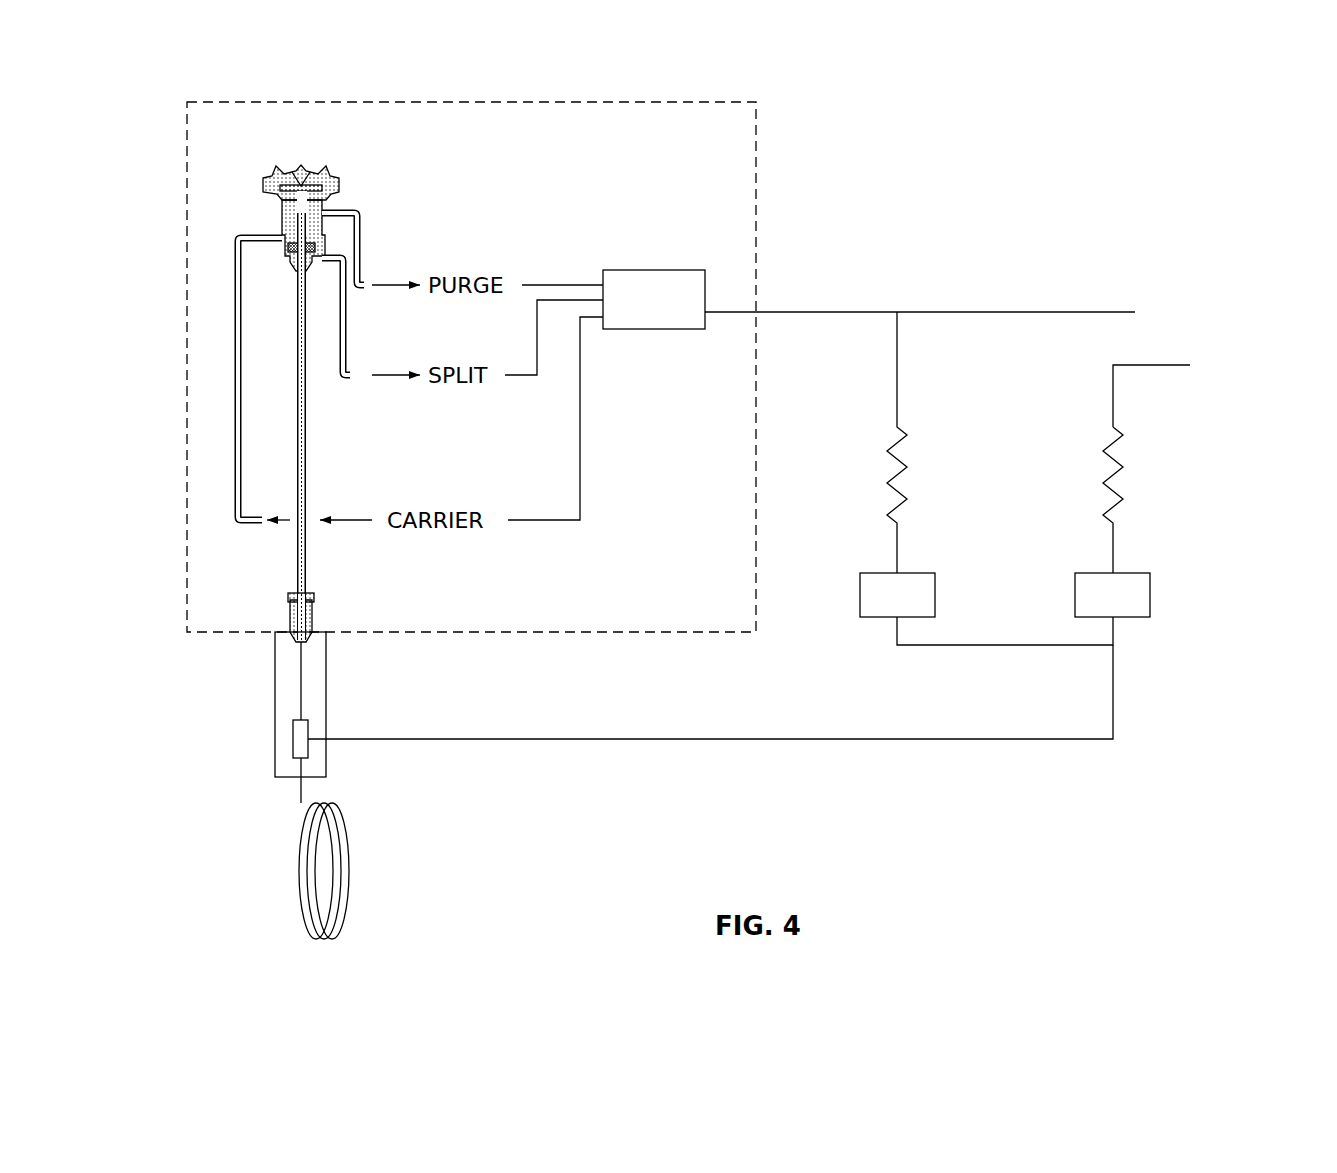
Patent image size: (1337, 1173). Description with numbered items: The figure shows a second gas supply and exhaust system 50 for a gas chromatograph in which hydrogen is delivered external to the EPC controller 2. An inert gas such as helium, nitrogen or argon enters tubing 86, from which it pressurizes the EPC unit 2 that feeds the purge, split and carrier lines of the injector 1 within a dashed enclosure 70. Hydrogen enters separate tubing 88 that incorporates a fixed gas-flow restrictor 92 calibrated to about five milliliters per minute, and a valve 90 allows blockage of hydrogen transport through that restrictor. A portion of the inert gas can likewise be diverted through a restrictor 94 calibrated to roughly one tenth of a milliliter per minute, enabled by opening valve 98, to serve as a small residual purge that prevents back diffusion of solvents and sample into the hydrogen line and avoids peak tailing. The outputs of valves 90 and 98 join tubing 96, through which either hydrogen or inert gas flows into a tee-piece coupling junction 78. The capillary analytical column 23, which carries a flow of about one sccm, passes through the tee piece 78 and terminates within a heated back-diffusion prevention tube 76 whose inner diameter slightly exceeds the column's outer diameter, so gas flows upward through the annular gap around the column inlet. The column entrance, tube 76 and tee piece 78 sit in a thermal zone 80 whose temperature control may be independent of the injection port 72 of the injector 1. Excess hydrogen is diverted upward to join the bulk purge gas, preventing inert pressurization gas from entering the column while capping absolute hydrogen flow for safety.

The injector 1 is at (385, 195).
The EPC controller 2 is at (672, 270).
The capillary analytical column 23 is at (288, 873).
The gas supply and exhaust system 50 is at (1133, 160).
The gas chromatograph enclosure 70 is at (756, 178).
The injection port 72 is at (297, 363).
The back-diffusion prevention tube 76 is at (300, 688).
The tee-piece coupling junction 78 is at (293, 737).
The thermal zone 80 is at (275, 668).
The tubing 86 is at (1047, 312).
The tubing 88 is at (1157, 365).
The valve 90 is at (1112, 595).
The fixed gas-flow restrictor 92 is at (1130, 472).
The restrictor 94 is at (878, 465).
The tubing 96 is at (770, 740).
The valve 98 is at (897, 595).